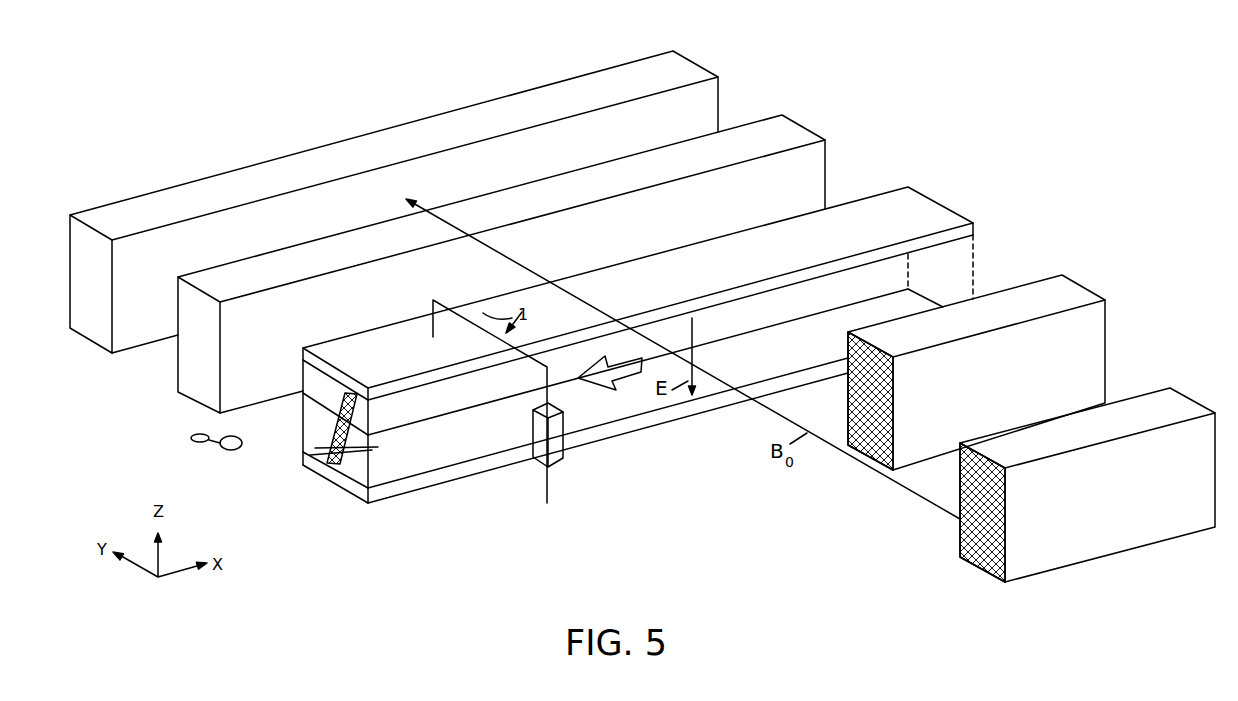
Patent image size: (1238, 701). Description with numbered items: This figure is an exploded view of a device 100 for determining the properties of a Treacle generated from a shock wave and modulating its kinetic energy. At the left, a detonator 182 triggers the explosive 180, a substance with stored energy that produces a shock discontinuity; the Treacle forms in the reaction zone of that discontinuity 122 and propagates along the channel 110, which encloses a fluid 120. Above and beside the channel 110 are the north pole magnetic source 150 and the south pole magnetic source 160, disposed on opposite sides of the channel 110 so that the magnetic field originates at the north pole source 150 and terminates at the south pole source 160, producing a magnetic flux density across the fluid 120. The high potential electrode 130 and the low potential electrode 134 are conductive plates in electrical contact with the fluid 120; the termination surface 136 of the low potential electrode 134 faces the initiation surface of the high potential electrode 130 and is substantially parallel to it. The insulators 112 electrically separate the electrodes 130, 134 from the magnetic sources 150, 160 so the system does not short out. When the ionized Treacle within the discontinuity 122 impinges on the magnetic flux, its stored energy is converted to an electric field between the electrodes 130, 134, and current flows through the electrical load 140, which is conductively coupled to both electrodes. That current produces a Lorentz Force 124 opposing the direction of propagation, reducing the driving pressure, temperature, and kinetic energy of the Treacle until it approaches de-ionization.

The device 100 is at (258, 108).
The channel 110 is at (681, 383).
The insulators 112 is at (796, 127).
The fluid 120 is at (300, 416).
The discontinuity 122 is at (315, 462).
The Lorentz Force 124 is at (625, 378).
The high potential electrode 130 is at (933, 206).
The low potential electrode 134 is at (415, 488).
The termination surface 136 is at (480, 448).
The electrical load 140 is at (564, 455).
The north pole magnetic source 150 is at (1183, 404).
The south pole magnetic source 160 is at (690, 62).
The explosive 180 is at (228, 451).
The detonator 182 is at (190, 436).